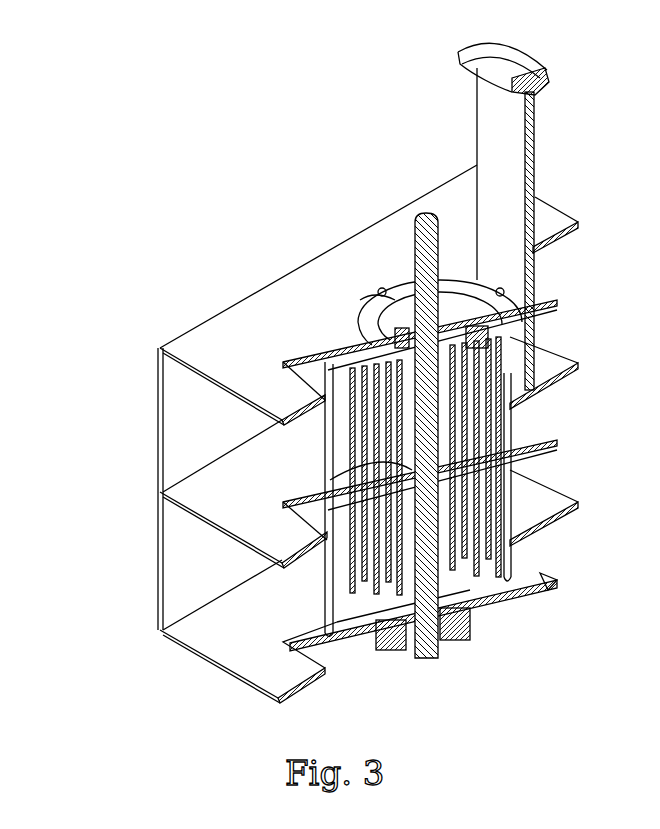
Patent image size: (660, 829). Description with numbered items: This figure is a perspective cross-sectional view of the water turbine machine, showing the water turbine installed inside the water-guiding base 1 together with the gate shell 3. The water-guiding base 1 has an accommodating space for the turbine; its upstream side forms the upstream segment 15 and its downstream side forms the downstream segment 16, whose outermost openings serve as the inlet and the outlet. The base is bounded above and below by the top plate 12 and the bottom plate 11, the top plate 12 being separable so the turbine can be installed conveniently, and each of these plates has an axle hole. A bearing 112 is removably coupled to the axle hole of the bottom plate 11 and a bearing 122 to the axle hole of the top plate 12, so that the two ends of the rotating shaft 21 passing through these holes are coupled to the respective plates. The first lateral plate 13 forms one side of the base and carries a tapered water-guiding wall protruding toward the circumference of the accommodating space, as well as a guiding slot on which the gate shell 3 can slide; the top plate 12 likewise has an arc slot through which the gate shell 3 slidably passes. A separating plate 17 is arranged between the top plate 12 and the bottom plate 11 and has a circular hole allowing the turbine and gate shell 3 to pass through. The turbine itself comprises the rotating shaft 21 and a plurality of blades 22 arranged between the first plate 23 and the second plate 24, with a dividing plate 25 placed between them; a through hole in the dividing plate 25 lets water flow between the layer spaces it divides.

The water-guiding base 1 is at (322, 437).
The gate shell 3 is at (512, 58).
The bottom plate 11 is at (250, 664).
The top plate 12 is at (176, 345).
The first lateral plate 13 is at (182, 543).
The upstream segment 15 is at (464, 425).
The downstream segment 16 is at (200, 585).
The separating plate 17 is at (190, 488).
The rotating shaft 21 is at (426, 213).
The blades 22 is at (502, 400).
The first plate 23 is at (522, 300).
The second plate 24 is at (525, 578).
The dividing plate 25 is at (522, 437).
The bearing 112 is at (462, 630).
The bearing 122 is at (372, 318).